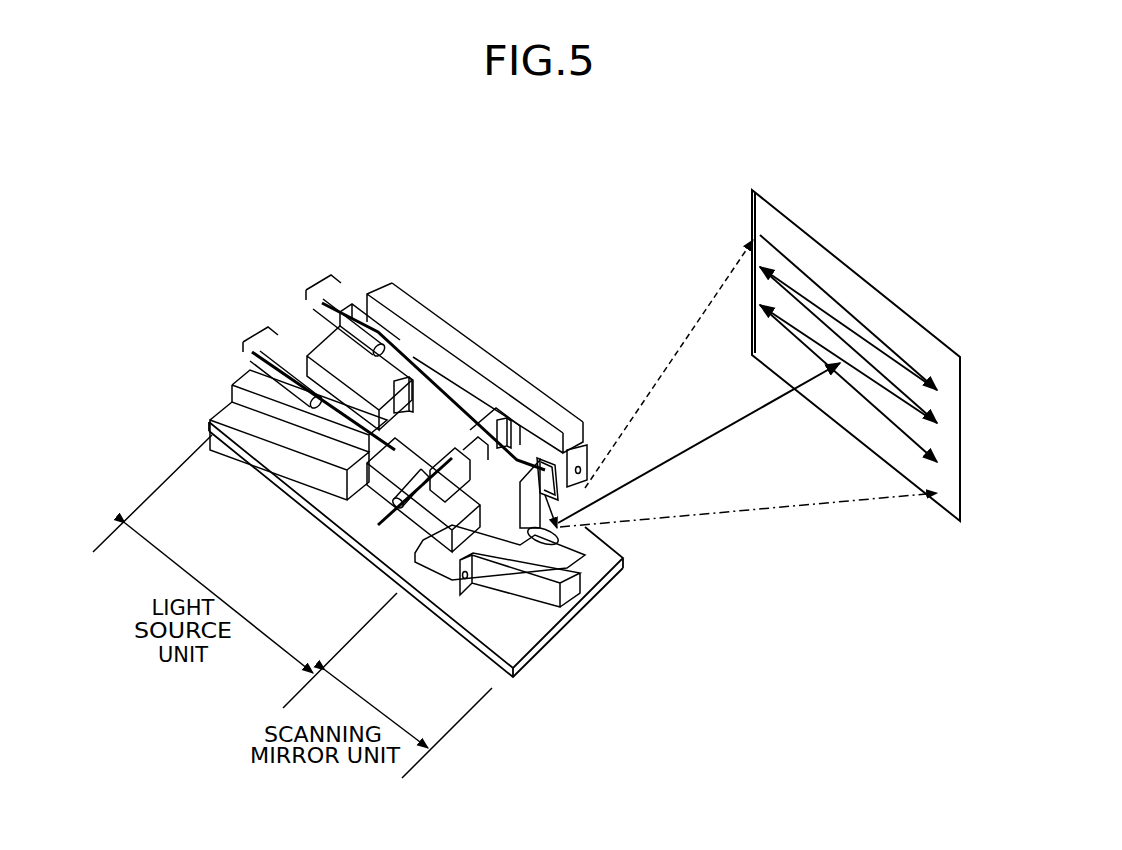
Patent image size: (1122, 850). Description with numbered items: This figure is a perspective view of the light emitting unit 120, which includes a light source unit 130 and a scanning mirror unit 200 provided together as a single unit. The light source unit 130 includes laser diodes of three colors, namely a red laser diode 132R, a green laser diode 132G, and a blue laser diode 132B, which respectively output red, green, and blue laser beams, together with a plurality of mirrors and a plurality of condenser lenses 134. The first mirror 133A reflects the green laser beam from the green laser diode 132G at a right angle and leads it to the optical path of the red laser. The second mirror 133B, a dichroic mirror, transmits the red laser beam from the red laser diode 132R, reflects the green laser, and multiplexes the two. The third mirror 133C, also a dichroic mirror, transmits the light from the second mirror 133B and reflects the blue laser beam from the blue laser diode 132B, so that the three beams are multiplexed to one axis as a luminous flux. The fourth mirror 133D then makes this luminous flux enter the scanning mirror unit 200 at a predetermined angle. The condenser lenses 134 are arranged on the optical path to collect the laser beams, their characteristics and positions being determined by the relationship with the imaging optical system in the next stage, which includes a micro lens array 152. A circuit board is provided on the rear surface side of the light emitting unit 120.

The light emitting unit 120 is at (552, 208).
The light source unit 130 is at (403, 303).
The red laser diode 132R is at (335, 303).
The green laser diode 132G is at (282, 342).
The blue laser diode 132B is at (367, 490).
The first mirror 133A is at (370, 438).
The second mirror 133B is at (420, 376).
The third mirror 133C is at (497, 416).
The fourth mirror 133D is at (580, 448).
The condenser lenses 134 is at (368, 330).
The micro lens array 152 is at (944, 500).
The scanning mirror unit 200 is at (572, 537).